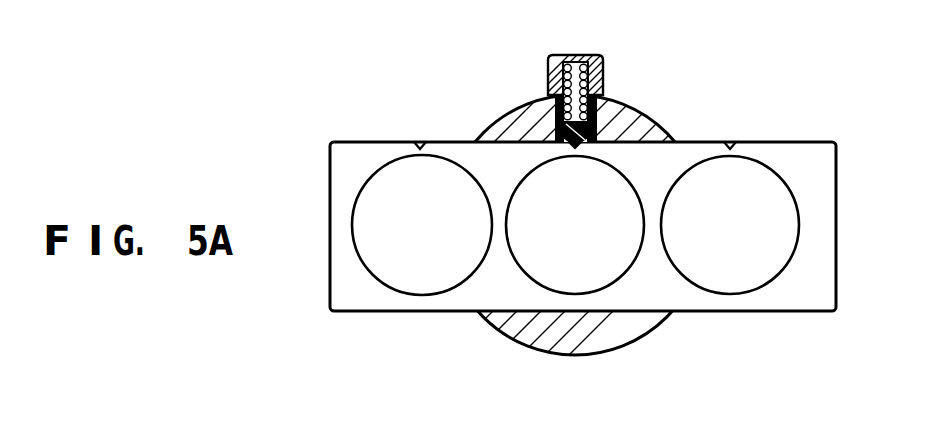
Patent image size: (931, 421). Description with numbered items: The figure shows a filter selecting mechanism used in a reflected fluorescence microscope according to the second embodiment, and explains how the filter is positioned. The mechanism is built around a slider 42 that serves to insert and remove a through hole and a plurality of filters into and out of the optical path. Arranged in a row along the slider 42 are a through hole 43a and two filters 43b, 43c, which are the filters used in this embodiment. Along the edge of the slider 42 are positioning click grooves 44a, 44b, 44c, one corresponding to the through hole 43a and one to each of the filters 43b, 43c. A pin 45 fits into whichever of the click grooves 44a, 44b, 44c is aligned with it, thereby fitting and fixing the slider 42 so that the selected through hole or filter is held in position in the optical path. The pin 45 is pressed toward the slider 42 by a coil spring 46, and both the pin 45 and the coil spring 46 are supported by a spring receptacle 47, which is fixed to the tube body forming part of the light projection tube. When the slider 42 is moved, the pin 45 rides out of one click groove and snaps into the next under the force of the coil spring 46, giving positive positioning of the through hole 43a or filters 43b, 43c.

The slider 42 is at (808, 142).
The through hole 43a is at (748, 280).
The filter 43b is at (622, 262).
The filter 43c is at (423, 282).
The positioning click groove 44a is at (735, 142).
The positioning click groove 44b is at (527, 142).
The positioning click groove 44c is at (420, 142).
The pin 45 is at (617, 104).
The coil spring 46 is at (597, 56).
The spring receptacle 47 is at (552, 57).